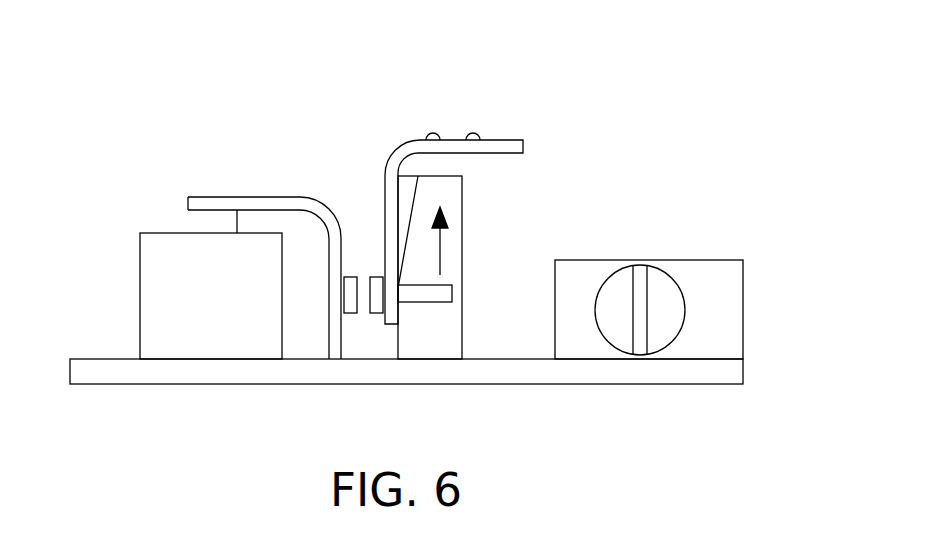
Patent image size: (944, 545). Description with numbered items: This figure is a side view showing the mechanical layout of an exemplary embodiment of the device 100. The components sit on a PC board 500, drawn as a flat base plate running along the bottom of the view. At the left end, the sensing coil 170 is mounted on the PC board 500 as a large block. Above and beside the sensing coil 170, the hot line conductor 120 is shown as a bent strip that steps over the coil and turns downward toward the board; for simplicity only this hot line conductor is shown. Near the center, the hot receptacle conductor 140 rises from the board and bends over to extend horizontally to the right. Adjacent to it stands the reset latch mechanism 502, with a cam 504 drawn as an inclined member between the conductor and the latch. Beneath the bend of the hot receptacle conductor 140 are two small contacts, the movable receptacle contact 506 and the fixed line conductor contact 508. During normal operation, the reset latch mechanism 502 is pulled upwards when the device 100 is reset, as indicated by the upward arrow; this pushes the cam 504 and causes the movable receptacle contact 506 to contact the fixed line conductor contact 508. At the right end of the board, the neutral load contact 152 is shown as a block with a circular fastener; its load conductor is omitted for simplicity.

The device 100 is at (692, 197).
The hot line conductor 120 is at (257, 203).
The hot receptacle conductor 140 is at (453, 138).
The neutral load contact 152 is at (728, 300).
The sensing coil 170 is at (165, 272).
The PC board 500 is at (520, 372).
The reset latch mechanism 502 is at (482, 240).
The cam 504 is at (408, 185).
The movable receptacle contact 506 is at (377, 277).
The fixed line conductor contact 508 is at (349, 277).